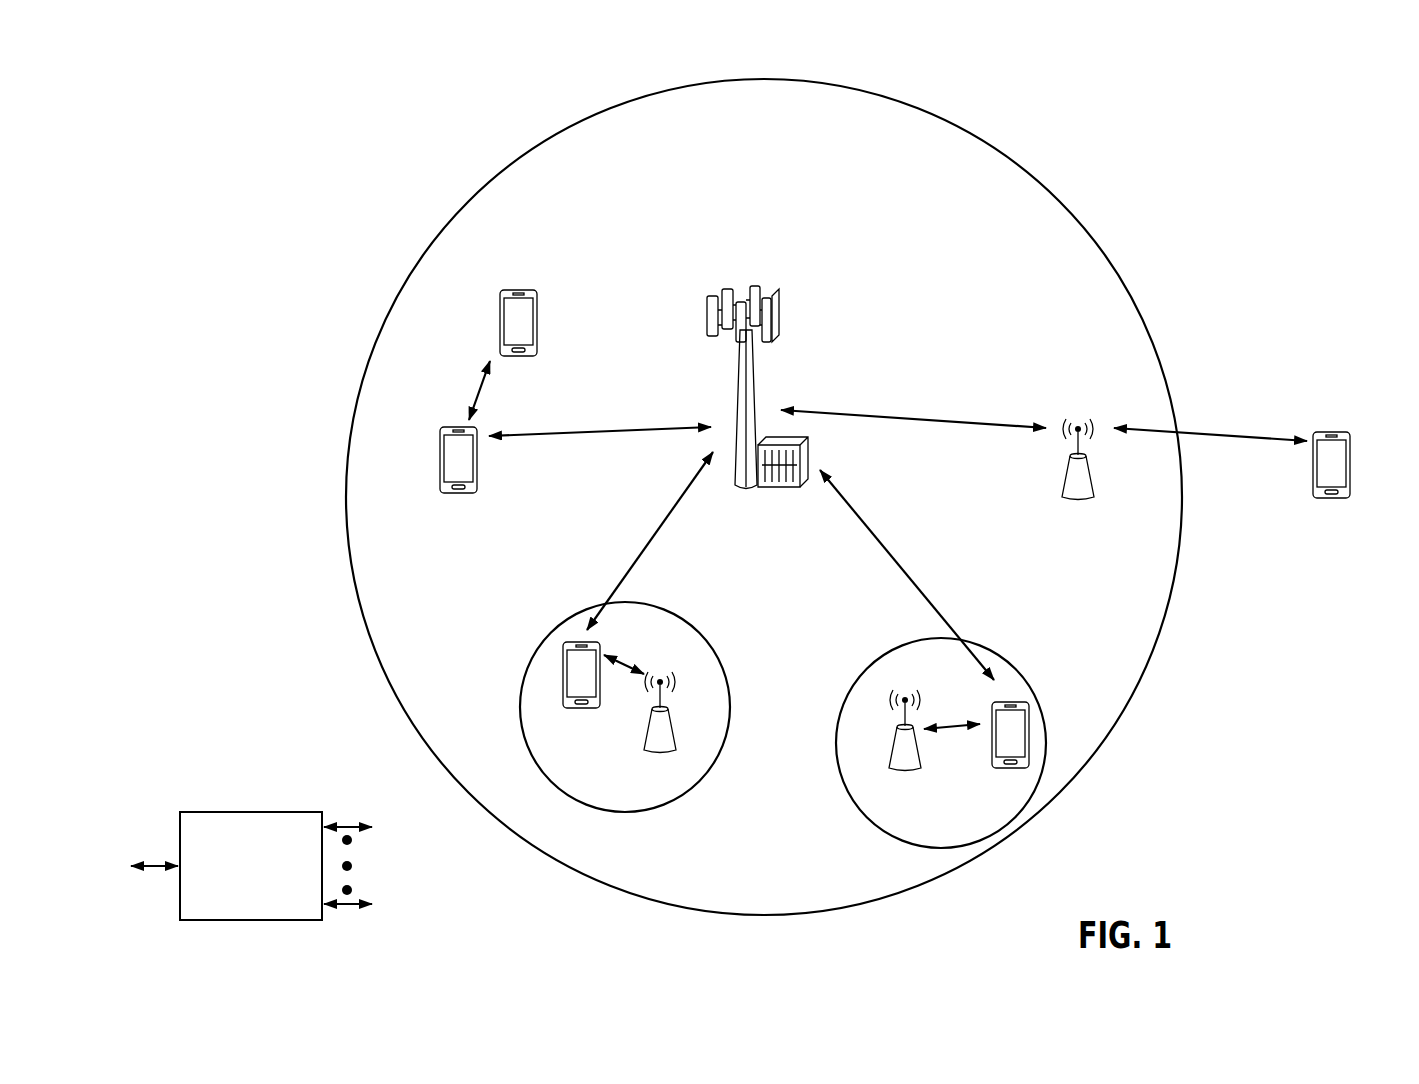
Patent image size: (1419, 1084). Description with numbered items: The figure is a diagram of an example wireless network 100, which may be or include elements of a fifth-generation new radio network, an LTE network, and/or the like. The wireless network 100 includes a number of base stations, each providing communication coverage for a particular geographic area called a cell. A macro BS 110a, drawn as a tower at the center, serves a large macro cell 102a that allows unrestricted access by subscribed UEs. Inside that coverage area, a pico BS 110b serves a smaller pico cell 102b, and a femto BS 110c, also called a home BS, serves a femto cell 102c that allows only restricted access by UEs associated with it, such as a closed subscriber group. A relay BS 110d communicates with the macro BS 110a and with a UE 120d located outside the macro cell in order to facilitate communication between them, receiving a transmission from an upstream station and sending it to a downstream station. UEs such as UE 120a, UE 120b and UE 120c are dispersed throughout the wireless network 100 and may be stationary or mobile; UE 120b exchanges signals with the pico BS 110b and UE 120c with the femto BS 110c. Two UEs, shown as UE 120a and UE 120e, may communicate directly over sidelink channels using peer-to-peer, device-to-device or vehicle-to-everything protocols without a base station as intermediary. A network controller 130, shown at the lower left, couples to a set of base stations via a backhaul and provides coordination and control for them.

The wireless network 100 is at (236, 73).
The macro cell 102a is at (1044, 185).
The pico cell 102b is at (715, 648).
The femto cell 102c is at (873, 652).
The macro BS 110a is at (752, 280).
The pico BS 110b is at (682, 742).
The femto BS 110c is at (887, 757).
The relay BS 110d is at (1081, 418).
The UE 120a is at (440, 455).
The UE 120b is at (568, 711).
The UE 120c is at (990, 770).
The UE 120d is at (1345, 430).
The UE 120e is at (500, 305).
The network controller 130 is at (251, 811).